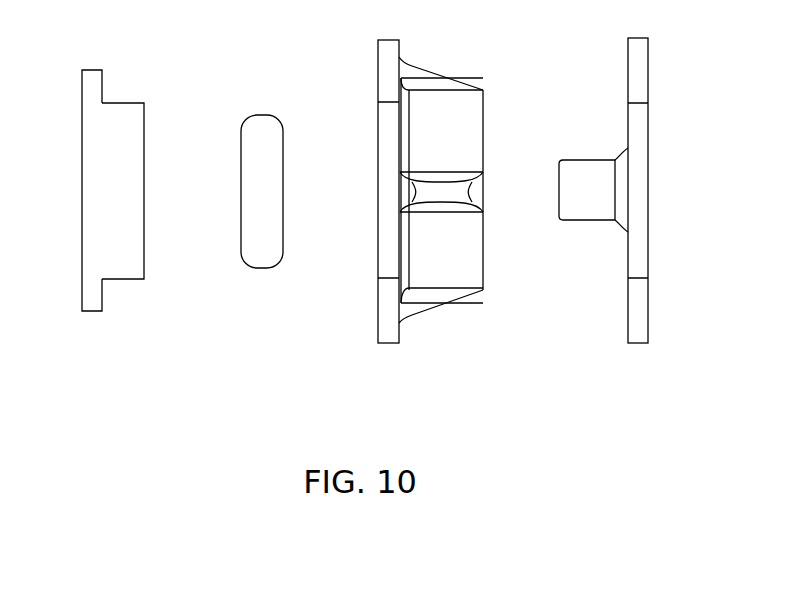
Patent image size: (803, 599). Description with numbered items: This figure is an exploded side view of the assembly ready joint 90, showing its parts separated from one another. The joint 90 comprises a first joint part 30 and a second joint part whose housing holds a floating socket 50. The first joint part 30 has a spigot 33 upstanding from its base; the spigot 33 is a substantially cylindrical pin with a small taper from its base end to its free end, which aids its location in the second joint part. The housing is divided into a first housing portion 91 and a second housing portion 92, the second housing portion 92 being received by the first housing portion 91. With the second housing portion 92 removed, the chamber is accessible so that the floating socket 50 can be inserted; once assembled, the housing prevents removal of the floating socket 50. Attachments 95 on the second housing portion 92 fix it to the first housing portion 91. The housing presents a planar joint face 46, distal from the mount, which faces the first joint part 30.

The joint 90 is at (316, 357).
The second housing portion 92 is at (128, 115).
The attachments 95 is at (92, 80).
The floating socket 50 is at (258, 128).
The first housing portion 91 is at (437, 278).
The joint face 46 is at (483, 120).
The first joint part 30 is at (640, 78).
The spigot 33 is at (593, 207).